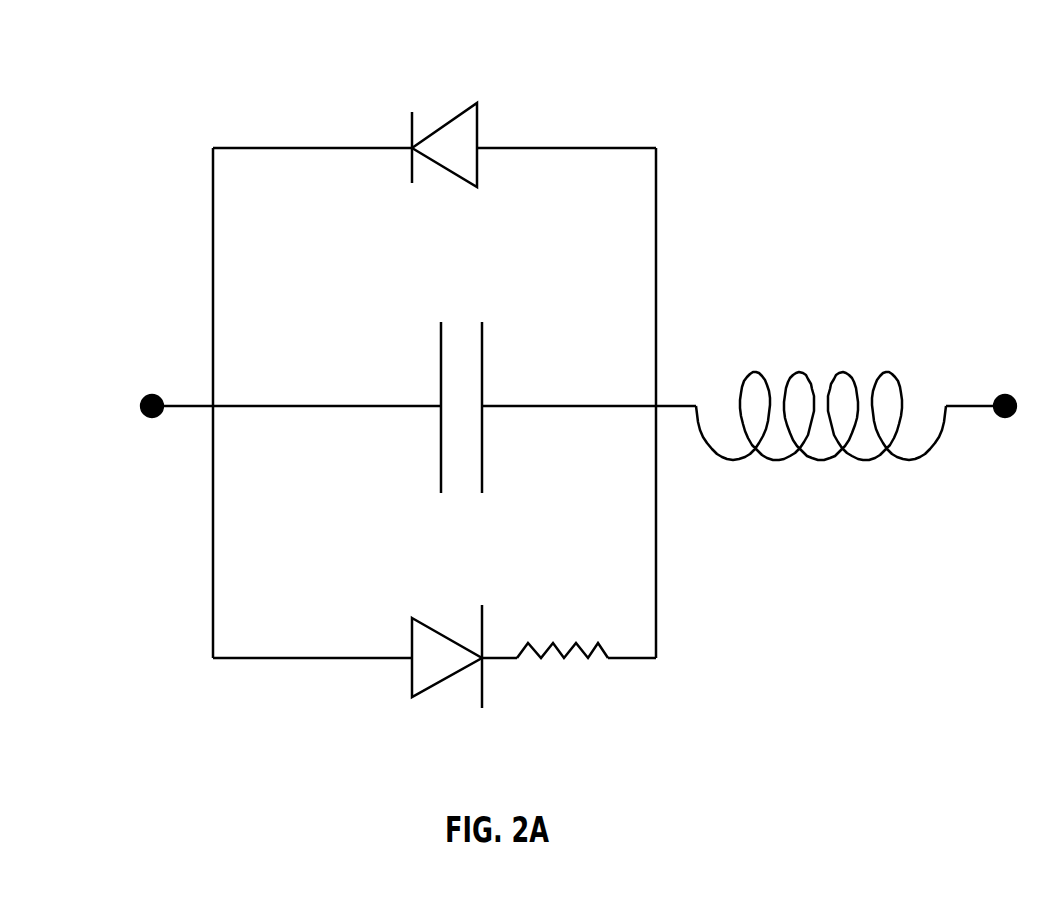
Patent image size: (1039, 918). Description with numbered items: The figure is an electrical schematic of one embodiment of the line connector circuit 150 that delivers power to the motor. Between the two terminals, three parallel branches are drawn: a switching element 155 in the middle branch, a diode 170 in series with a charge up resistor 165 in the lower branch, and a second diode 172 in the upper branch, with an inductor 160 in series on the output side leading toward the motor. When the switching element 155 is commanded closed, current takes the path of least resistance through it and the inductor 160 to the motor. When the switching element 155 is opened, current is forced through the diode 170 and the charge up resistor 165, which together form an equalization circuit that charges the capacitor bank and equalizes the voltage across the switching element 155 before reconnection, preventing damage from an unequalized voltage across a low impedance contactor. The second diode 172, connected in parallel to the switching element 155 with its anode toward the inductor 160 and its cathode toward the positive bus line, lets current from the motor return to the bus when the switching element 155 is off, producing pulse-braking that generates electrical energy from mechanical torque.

The line connector circuit 150 is at (633, 772).
The switching element 155 is at (484, 345).
The inductor 160 is at (806, 372).
The charge up resistor 165 is at (564, 660).
The diode 170 is at (427, 692).
The second diode 172 is at (458, 112).